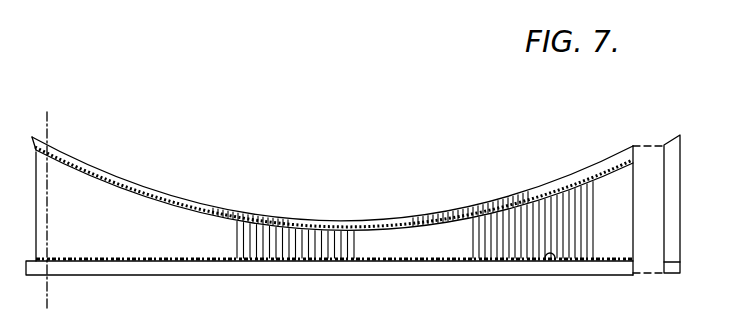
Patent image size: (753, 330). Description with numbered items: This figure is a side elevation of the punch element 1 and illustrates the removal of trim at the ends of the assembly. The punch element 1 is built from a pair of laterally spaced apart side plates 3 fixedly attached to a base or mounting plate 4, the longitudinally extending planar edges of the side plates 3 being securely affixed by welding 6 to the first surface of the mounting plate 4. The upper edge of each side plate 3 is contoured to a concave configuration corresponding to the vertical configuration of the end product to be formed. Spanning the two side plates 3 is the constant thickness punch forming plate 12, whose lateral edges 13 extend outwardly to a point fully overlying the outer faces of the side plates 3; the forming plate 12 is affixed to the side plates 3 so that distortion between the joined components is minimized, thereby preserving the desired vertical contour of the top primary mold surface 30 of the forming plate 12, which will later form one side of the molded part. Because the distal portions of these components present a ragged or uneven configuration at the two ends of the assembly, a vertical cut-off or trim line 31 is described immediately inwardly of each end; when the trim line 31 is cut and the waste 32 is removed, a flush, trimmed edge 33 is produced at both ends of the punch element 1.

The punch element 1 is at (332, 183).
The side plate 3 is at (276, 239).
The mounting plate 4 is at (392, 275).
The welding 6 is at (540, 267).
The punch forming plate 12 is at (134, 188).
The lateral edge 13 is at (519, 200).
The top primary mold surface 30 is at (480, 208).
The trim line 31 is at (48, 130).
The waste 32 is at (672, 187).
The trimmed edge 33 is at (636, 172).